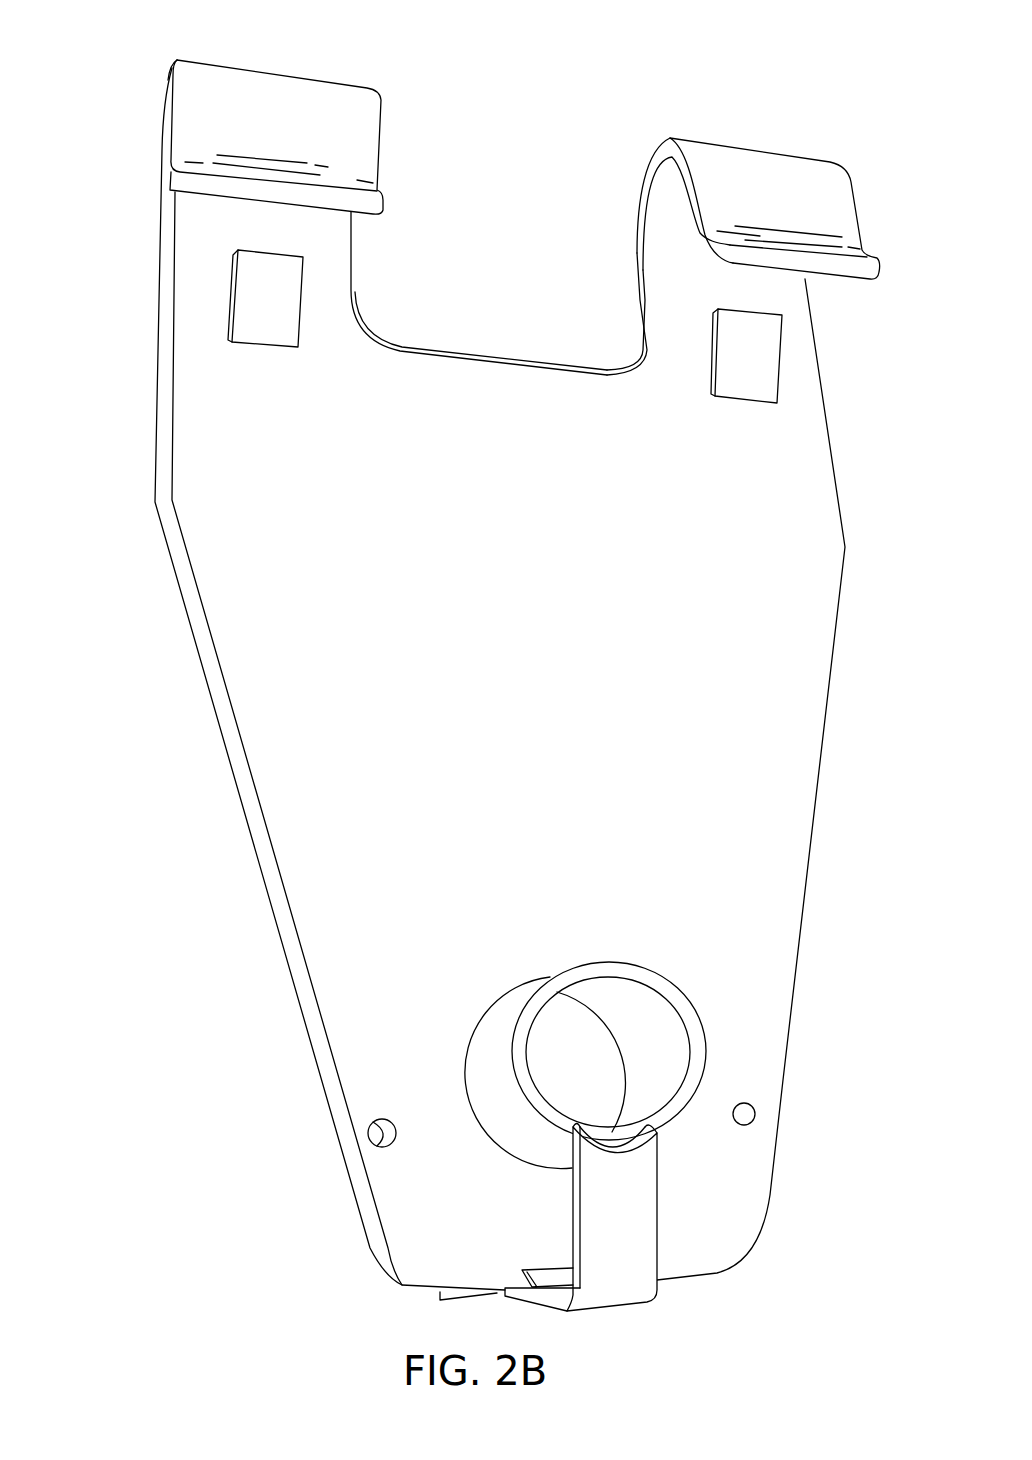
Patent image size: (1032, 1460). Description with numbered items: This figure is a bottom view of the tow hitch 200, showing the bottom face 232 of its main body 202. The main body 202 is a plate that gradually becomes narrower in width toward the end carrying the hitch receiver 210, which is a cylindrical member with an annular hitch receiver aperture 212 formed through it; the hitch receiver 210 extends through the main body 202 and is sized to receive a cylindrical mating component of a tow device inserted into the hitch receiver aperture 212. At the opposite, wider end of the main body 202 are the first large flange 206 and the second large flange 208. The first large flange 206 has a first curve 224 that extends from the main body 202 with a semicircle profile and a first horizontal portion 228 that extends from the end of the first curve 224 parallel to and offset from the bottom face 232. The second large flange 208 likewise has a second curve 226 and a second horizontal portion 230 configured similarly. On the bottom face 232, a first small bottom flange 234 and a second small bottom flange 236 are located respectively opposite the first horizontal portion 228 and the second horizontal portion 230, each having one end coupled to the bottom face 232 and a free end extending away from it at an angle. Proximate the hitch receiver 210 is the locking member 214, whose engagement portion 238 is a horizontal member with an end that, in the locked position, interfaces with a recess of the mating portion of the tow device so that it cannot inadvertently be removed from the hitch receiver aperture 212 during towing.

The tow hitch 200 is at (808, 128).
The main body 202 is at (163, 501).
The first large flange 206 is at (619, 142).
The second large flange 208 is at (123, 176).
The hitch receiver 210 is at (700, 1057).
The hitch receiver aperture 212 is at (632, 993).
The locking member 214 is at (641, 1319).
The first curve 224 is at (667, 138).
The second curve 226 is at (175, 68).
The first horizontal portion 228 is at (847, 190).
The second horizontal portion 230 is at (263, 79).
The bottom face 232 is at (310, 827).
The first small bottom flange 234 is at (755, 397).
The second small bottom flange 236 is at (274, 345).
The engagement portion 238 is at (652, 1242).